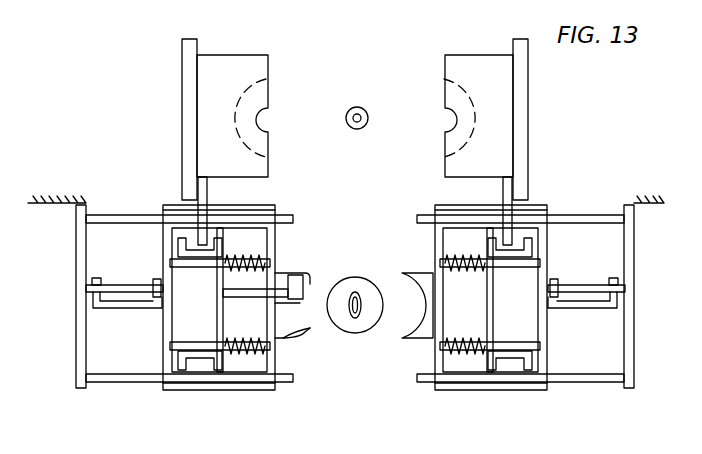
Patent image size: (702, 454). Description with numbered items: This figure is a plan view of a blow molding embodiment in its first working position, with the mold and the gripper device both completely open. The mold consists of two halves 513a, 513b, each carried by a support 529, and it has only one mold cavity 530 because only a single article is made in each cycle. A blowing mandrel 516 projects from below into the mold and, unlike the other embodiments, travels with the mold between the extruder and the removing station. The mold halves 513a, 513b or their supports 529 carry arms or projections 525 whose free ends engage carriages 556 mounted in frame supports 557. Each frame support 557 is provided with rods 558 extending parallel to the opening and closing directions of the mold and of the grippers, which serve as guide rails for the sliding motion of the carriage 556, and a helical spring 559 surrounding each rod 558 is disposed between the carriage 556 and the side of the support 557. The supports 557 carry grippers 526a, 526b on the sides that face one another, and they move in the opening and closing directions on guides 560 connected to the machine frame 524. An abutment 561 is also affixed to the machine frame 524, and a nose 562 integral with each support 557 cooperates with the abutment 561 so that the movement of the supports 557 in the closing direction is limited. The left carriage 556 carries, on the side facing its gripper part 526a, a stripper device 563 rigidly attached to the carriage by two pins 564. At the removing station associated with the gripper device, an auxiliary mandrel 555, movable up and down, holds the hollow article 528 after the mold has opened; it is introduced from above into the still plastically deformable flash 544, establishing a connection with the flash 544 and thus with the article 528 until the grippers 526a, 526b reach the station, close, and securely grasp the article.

The mold half 513a is at (197, 132).
The mold half 513b is at (510, 113).
The blowing mandrel 516 is at (363, 106).
The machine frame 524 is at (50, 200).
The arm 525 is at (198, 192).
The gripper 526a is at (297, 340).
The gripper 526b is at (422, 343).
The hollow article 528 is at (356, 318).
The support 529 is at (190, 47).
The mold cavity 530 is at (262, 84).
The flash 544 is at (312, 344).
The auxiliary mandrel 555 is at (358, 289).
The carriage 556 is at (185, 311).
The frame support 557 is at (295, 236).
The rod 558 is at (240, 262).
The helical spring 559 is at (237, 355).
The guide 560 is at (130, 382).
The abutment 561 is at (156, 279).
The nose 562 is at (97, 280).
The stripper device 563 is at (305, 291).
The pin 564 is at (300, 276).